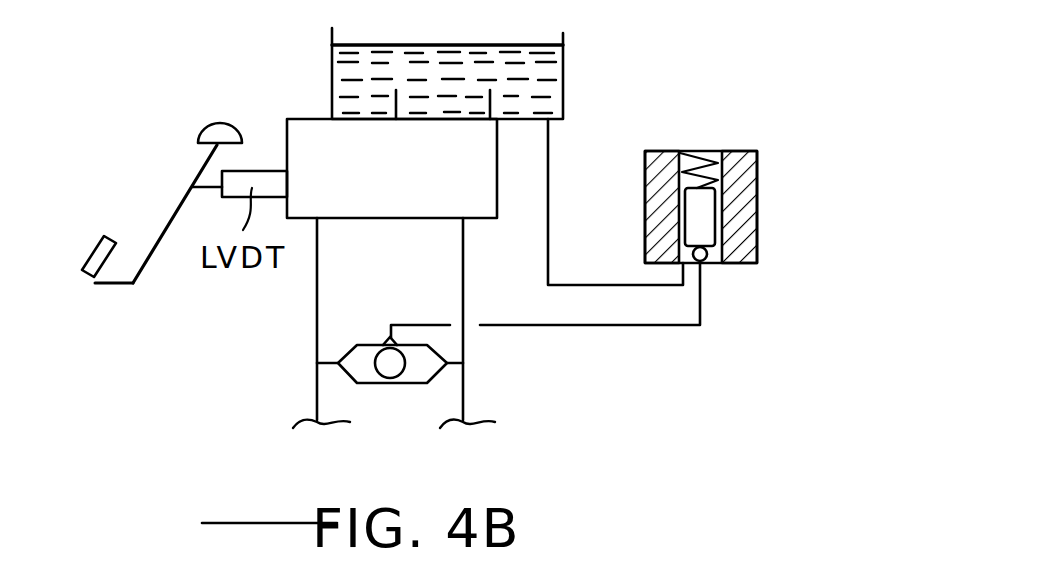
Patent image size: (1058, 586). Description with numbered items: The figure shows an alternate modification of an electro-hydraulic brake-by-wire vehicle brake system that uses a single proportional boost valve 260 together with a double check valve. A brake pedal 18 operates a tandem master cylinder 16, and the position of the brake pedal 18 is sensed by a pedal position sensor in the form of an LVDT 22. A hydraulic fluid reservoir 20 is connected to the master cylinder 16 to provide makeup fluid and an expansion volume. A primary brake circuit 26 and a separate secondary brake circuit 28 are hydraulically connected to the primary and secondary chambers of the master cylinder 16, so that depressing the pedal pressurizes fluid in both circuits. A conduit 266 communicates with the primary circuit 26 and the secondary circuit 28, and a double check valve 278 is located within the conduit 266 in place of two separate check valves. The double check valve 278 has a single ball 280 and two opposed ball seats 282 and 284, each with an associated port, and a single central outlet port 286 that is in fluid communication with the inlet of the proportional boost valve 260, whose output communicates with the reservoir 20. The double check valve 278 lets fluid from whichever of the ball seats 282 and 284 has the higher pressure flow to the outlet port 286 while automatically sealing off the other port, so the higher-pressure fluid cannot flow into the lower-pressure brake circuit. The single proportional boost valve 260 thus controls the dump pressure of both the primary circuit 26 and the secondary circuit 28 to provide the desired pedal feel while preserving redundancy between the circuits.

The tandem master cylinder 16 is at (497, 198).
The brake pedal 18 is at (165, 233).
The hydraulic fluid reservoir 20 is at (550, 78).
The LVDT 22 is at (252, 171).
The primary brake circuit 26 is at (319, 275).
The secondary brake circuit 28 is at (463, 250).
The proportional boost valve 260 is at (757, 188).
The conduit 266 is at (453, 368).
The double check valve 278 is at (357, 390).
The ball 280 is at (370, 383).
The ball seat 282 is at (345, 352).
The ball seat 284 is at (440, 384).
The central outlet port 286 is at (400, 341).